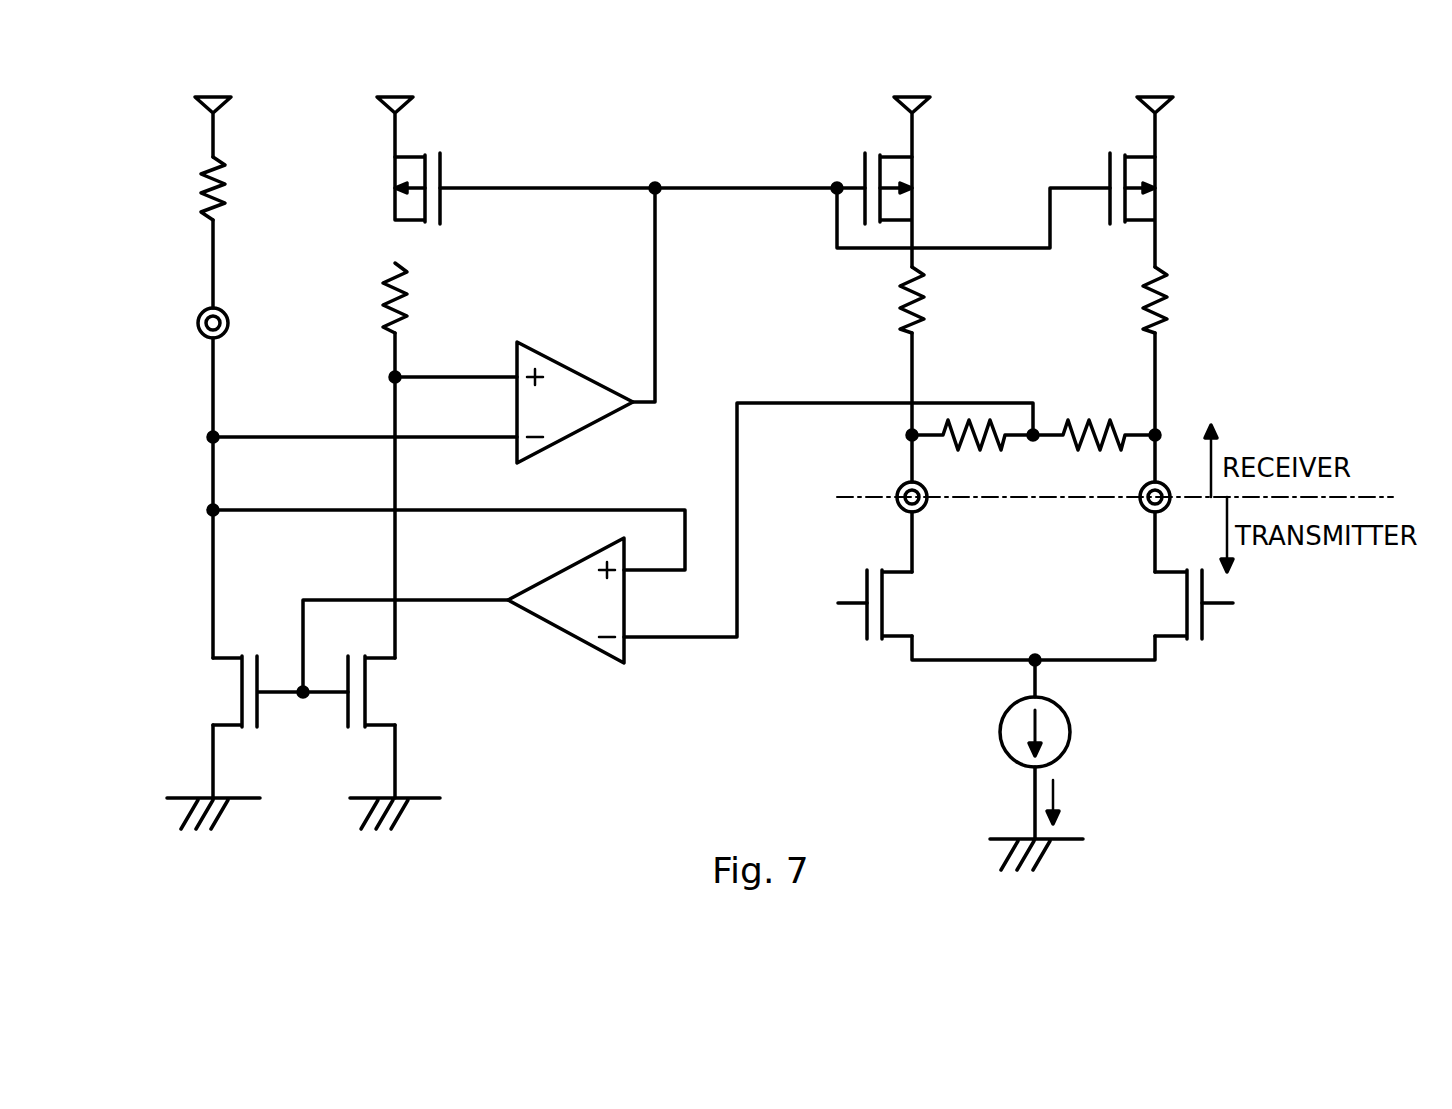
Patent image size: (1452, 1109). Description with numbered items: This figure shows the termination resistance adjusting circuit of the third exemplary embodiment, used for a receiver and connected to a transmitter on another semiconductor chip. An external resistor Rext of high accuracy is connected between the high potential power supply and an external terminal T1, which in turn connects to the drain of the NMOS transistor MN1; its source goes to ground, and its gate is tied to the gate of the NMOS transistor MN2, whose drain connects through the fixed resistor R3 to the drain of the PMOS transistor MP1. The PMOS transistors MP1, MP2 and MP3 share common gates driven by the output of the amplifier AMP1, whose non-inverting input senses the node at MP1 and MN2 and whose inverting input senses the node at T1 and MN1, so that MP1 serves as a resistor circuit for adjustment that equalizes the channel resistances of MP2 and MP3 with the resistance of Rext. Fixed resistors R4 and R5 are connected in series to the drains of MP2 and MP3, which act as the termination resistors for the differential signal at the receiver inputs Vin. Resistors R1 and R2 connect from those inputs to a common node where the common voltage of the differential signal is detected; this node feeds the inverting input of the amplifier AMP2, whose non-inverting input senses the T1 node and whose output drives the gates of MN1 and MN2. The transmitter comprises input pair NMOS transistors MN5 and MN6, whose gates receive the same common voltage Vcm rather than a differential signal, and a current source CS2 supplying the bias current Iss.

The external resistor Rext is at (207, 185).
The external terminal T1 is at (190, 323).
The PMOS transistor MP1 is at (381, 188).
The PMOS transistor MP2 is at (920, 210).
The PMOS transistor MP3 is at (1167, 210).
The resistor R1 is at (972, 455).
The resistor R2 is at (1094, 455).
The fixed resistor R3 is at (416, 298).
The fixed resistor R4 is at (935, 300).
The fixed resistor R5 is at (1178, 300).
The amplifier AMP1 is at (522, 343).
The amplifier AMP2 is at (610, 665).
The NMOS transistor MN1 is at (229, 692).
The NMOS transistor MN2 is at (378, 692).
The NMOS transistor MN5 is at (895, 603).
The NMOS transistor MN6 is at (1174, 603).
The input voltage terminal Vin is at (1031, 484).
The common voltage Vcm is at (1038, 603).
The current source CS2 is at (1072, 732).
The bias current Iss is at (1072, 802).